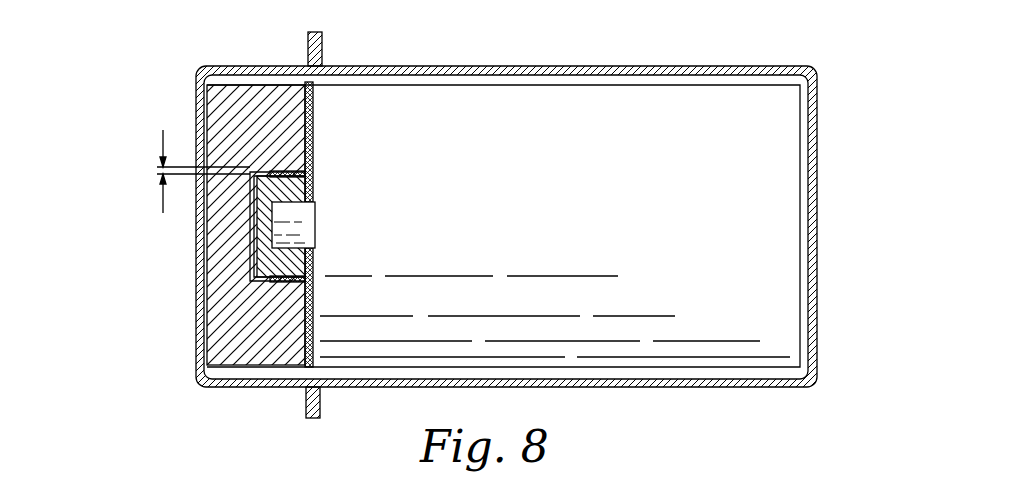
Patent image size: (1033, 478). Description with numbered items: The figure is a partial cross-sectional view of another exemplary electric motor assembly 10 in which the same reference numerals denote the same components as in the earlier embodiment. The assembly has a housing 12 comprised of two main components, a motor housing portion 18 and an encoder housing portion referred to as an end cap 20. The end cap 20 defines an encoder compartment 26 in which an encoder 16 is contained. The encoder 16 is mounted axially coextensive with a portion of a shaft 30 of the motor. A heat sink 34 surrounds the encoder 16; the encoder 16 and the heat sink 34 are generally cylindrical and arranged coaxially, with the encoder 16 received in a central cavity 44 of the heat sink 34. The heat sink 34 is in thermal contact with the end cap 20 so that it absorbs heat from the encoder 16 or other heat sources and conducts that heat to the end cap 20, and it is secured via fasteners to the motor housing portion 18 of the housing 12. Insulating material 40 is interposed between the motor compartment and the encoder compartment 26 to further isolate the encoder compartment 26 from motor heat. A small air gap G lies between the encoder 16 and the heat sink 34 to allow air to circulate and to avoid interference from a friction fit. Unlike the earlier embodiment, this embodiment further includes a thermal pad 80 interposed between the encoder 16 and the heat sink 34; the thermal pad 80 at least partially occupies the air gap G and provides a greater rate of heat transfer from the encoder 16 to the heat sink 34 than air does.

The electric motor assembly 10 is at (101, 128).
The housing 12 is at (726, 66).
The encoder 16 is at (313, 192).
The motor housing portion 18 is at (590, 66).
The end cap 20 is at (197, 283).
The encoder compartment 26 is at (266, 370).
The shaft 30 is at (300, 220).
The heat sink 34 is at (243, 125).
The insulating material 40 is at (301, 122).
The central cavity 44 is at (258, 282).
The thermal pad 80 is at (290, 282).
The air gap G is at (163, 169).